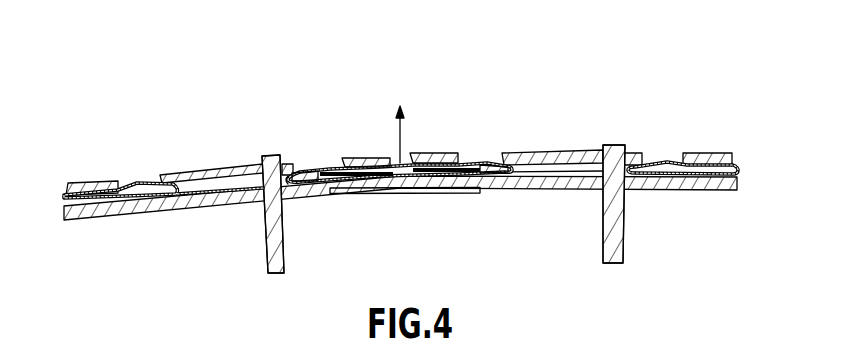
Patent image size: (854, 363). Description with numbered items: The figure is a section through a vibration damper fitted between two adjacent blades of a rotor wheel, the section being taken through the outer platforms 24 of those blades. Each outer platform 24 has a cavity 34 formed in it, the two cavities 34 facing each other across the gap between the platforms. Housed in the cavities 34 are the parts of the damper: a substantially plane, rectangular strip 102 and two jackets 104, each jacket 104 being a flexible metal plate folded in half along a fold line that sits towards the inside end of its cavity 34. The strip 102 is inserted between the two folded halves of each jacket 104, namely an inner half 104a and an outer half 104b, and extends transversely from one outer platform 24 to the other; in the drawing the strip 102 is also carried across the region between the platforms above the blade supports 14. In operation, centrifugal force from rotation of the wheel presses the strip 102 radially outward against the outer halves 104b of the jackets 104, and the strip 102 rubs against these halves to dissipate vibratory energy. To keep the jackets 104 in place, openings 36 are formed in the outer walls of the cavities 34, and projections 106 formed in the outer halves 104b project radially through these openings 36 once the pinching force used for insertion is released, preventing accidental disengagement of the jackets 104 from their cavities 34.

The post 14 is at (265, 251).
The outer platform 24 is at (189, 167).
The cavity 34 is at (560, 172).
The opening 36 is at (300, 170).
The strip 102 is at (417, 193).
The jacket 104 is at (125, 181).
The inner half 104a is at (377, 189).
The outer half 104b is at (375, 157).
The projection 106 is at (317, 162).